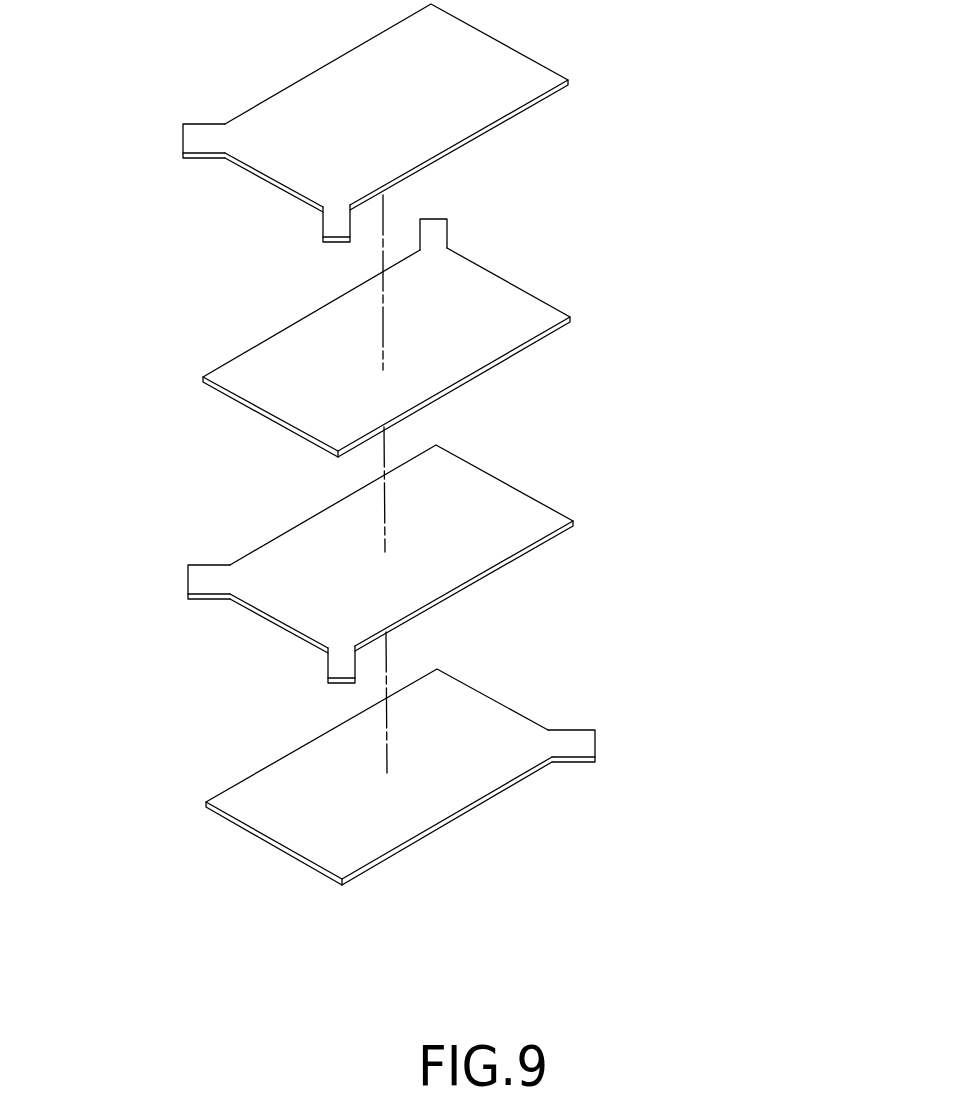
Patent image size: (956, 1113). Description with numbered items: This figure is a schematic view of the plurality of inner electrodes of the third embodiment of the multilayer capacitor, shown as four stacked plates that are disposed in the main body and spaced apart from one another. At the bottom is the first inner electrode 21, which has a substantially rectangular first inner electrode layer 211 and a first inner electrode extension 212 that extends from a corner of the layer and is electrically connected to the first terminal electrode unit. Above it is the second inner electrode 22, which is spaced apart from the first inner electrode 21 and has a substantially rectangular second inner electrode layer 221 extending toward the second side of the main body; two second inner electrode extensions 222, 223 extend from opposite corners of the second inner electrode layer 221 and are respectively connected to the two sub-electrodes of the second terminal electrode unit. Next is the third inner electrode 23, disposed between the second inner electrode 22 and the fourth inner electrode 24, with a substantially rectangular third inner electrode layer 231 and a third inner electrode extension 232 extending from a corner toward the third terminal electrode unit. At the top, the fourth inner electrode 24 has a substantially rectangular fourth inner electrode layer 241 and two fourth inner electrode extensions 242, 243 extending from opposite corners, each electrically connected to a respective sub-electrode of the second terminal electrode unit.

The first inner electrode 21 is at (406, 792).
The first inner electrode layer 211 is at (447, 776).
The first inner electrode extension 212 is at (568, 738).
The second inner electrode 22 is at (329, 587).
The second inner electrode layer 221 is at (278, 598).
The second inner electrode extension 222 is at (195, 580).
The second inner electrode extension 223 is at (327, 667).
The third inner electrode 23 is at (428, 292).
The third inner electrode layer 231 is at (497, 318).
The third inner electrode extension 232 is at (440, 240).
The fourth inner electrode 24 is at (324, 147).
The fourth inner electrode layer 241 is at (272, 157).
The fourth inner electrode extension 242 is at (323, 226).
The fourth inner electrode extension 243 is at (184, 138).